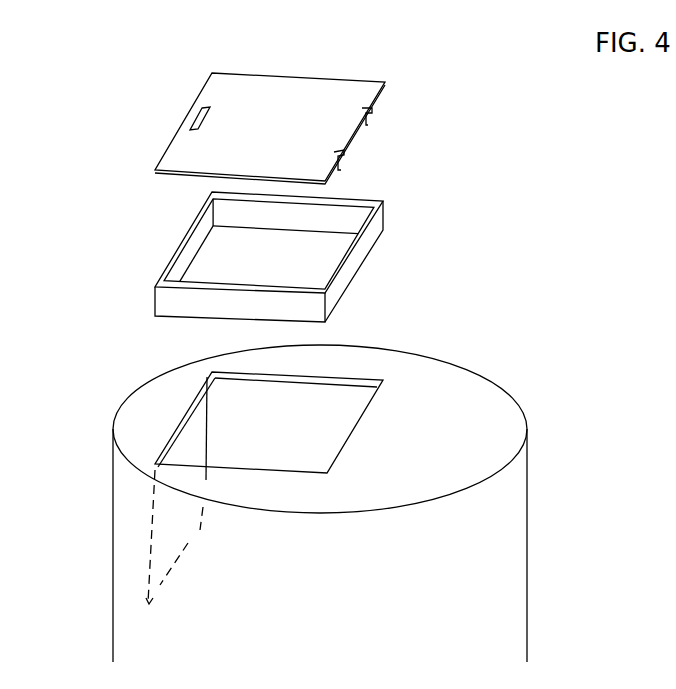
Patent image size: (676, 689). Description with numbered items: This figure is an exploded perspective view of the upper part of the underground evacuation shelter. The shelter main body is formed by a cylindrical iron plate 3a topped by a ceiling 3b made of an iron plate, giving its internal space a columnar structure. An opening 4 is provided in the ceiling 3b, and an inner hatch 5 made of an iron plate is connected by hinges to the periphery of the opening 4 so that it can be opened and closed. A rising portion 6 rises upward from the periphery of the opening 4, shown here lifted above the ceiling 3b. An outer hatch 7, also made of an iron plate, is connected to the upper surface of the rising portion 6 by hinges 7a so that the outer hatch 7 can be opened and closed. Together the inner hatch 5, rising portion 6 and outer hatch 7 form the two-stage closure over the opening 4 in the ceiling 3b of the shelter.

The outer hatch 7 is at (298, 92).
The hinges 7a is at (370, 113).
The rising portion 6 is at (358, 256).
The opening 4 is at (322, 405).
The inner hatch 5 is at (148, 535).
The cylindrical iron plate 3a is at (510, 557).
The ceiling 3b is at (500, 412).